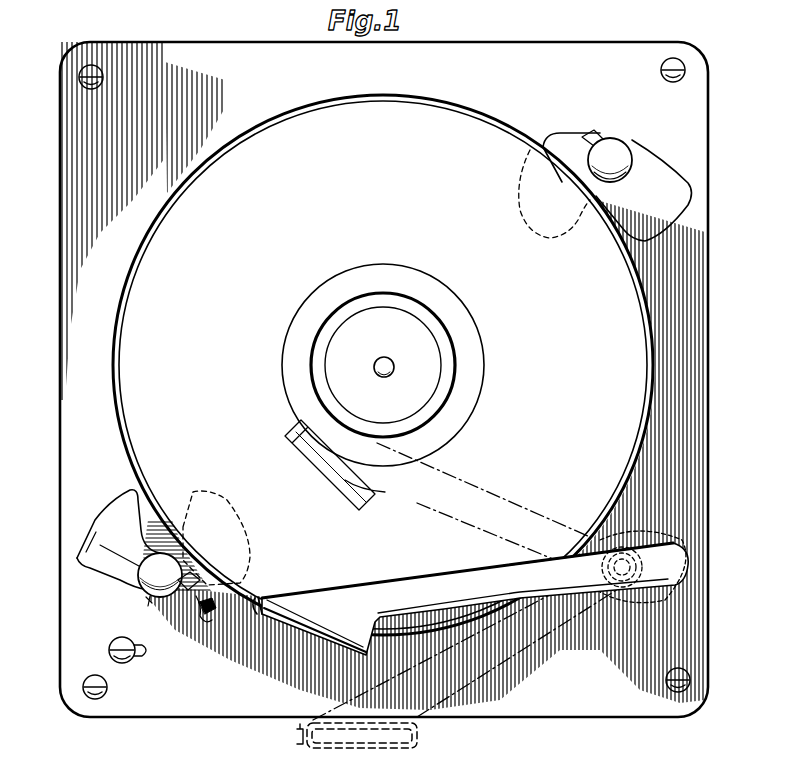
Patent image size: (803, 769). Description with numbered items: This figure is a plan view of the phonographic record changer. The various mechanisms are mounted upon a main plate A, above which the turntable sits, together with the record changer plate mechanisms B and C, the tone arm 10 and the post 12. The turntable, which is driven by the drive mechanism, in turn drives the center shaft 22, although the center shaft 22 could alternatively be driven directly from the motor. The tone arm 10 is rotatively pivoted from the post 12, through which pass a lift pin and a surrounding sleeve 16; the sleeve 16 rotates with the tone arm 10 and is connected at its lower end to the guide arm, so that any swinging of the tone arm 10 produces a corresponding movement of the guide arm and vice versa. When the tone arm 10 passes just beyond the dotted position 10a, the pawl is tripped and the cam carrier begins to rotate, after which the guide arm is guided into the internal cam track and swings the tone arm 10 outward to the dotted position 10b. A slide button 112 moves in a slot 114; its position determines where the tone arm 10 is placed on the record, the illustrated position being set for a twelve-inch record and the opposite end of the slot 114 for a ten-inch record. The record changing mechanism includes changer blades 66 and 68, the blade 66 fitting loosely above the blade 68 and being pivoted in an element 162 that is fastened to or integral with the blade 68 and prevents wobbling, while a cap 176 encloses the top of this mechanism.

The plate A is at (709, 368).
The record changer plate mechanism B is at (124, 596).
The record changer plate mechanism C is at (641, 153).
The tone arm 10 is at (421, 579).
The dotted position of tone arm 10a is at (518, 508).
The outward position of tone arm 10b is at (508, 690).
The post 12 is at (160, 577).
The sleeve 16 is at (640, 542).
The center shaft 22 is at (389, 360).
The changer blade 66 is at (94, 556).
The changer blade 68 is at (203, 620).
The slide button 112 is at (128, 662).
The slot 114 is at (146, 650).
The element 162 is at (200, 571).
The cap 176 is at (148, 600).